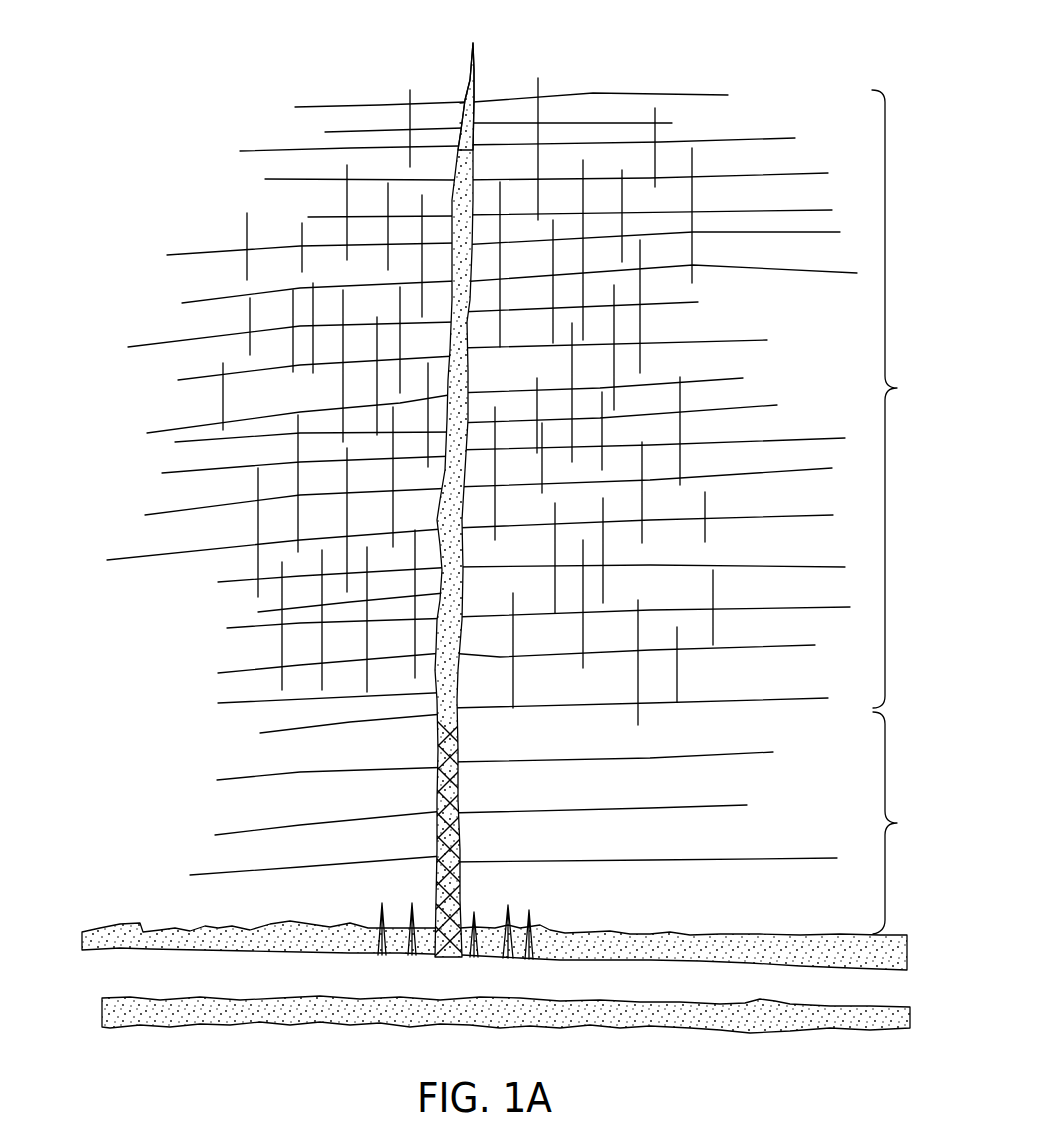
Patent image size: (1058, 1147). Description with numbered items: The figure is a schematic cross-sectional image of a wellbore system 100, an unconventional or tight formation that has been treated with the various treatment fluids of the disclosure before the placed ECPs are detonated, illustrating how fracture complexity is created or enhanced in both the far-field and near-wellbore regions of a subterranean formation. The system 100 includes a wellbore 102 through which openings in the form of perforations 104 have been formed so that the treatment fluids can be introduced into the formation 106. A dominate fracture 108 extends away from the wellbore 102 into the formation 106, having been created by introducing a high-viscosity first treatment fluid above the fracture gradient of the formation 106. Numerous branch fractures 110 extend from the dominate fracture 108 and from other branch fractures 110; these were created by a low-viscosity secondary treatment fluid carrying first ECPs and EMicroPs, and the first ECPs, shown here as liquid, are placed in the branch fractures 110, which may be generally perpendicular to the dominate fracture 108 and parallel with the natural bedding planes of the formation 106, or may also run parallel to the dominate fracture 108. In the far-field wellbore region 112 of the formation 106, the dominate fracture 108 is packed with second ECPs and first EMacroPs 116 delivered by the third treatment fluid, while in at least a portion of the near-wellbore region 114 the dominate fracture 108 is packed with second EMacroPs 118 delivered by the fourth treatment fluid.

The wellbore system 100 is at (743, 44).
The wellbore 102 is at (772, 983).
The perforations 104 is at (476, 916).
The formation 106 is at (173, 739).
The dominate fracture 108 is at (467, 120).
The branch fractures 110 is at (778, 173).
The far-field wellbore region 112 is at (902, 399).
The near-wellbore region 114 is at (905, 823).
The second ECPs and first EMacroPs 116 is at (467, 157).
The second EMacroPs 118 is at (460, 738).